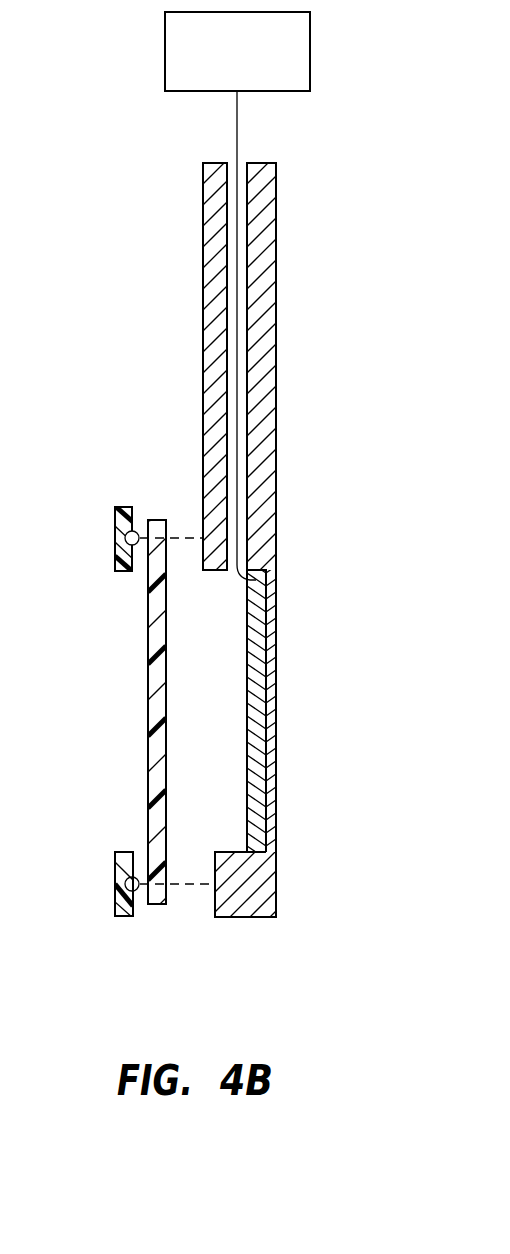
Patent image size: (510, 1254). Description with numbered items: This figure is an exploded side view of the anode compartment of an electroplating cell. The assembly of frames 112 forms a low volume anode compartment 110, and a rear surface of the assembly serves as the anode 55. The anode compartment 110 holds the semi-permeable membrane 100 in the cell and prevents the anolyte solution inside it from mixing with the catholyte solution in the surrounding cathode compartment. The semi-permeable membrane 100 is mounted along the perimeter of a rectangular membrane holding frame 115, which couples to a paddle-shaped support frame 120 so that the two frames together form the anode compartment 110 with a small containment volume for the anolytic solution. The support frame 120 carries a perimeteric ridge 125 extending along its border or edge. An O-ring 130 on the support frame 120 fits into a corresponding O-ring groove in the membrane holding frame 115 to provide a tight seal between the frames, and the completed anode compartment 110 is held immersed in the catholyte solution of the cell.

The assembly of frames 112 is at (325, 158).
The support frame 120 is at (277, 396).
The anode compartment 110 is at (232, 650).
The anode 55 is at (252, 706).
The perimeteric ridge 125 is at (243, 917).
The semi-permeable membrane 100 is at (148, 680).
The O-ring 130 is at (133, 531).
The membrane holding frame 115 is at (115, 868).